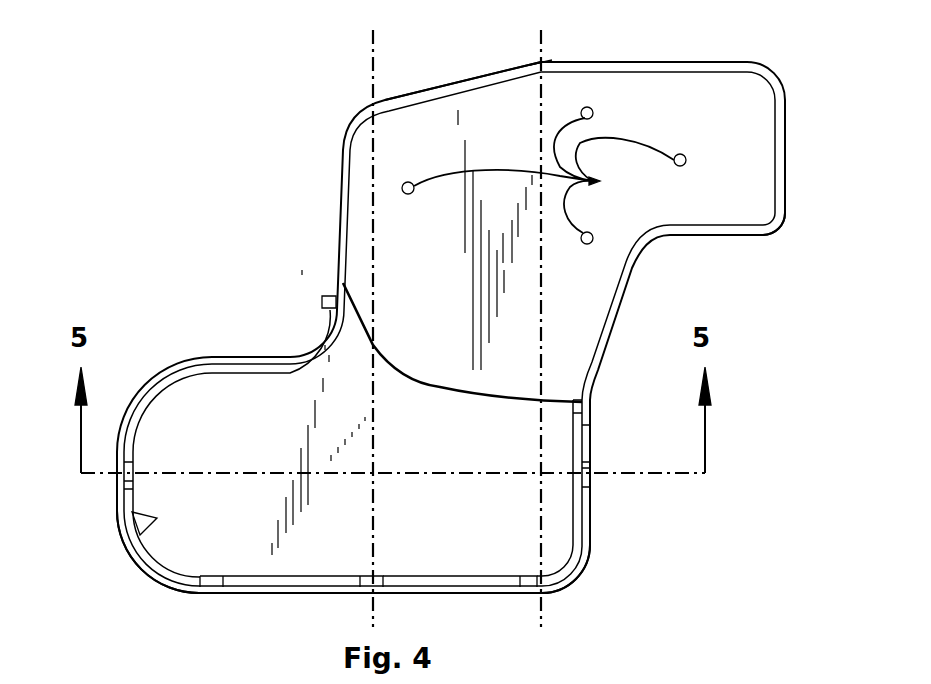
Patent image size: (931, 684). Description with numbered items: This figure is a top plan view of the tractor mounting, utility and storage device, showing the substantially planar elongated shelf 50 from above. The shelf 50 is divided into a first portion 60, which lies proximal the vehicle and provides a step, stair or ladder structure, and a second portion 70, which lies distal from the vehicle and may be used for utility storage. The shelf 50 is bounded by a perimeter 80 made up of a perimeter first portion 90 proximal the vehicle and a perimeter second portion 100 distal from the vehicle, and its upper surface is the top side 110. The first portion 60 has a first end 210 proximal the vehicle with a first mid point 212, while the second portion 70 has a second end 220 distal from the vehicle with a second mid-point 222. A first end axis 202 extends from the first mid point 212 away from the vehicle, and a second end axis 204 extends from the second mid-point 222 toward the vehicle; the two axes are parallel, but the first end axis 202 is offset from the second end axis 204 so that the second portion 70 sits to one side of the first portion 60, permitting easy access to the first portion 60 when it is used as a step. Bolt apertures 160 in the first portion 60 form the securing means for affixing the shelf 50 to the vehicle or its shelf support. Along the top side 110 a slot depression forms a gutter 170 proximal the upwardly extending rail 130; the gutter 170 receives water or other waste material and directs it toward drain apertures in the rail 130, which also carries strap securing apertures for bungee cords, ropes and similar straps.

The substantially planar elongated shelf 50 is at (395, 243).
The first portion 60 is at (667, 87).
The second portion 70 is at (222, 385).
The perimeter 80 is at (487, 593).
The perimeter first portion 90 is at (579, 62).
The perimeter second portion 100 is at (593, 527).
The top side 110 is at (733, 213).
The upwardly extending rail 130 is at (193, 590).
The bolt apertures 160 is at (544, 175).
The gutter 170 is at (130, 521).
The first end axis 202 is at (543, 605).
The second end axis 204 is at (372, 60).
The first end 210 is at (473, 82).
The first mid point 212 is at (540, 62).
The second end 220 is at (318, 595).
The second mid-point 222 is at (373, 593).